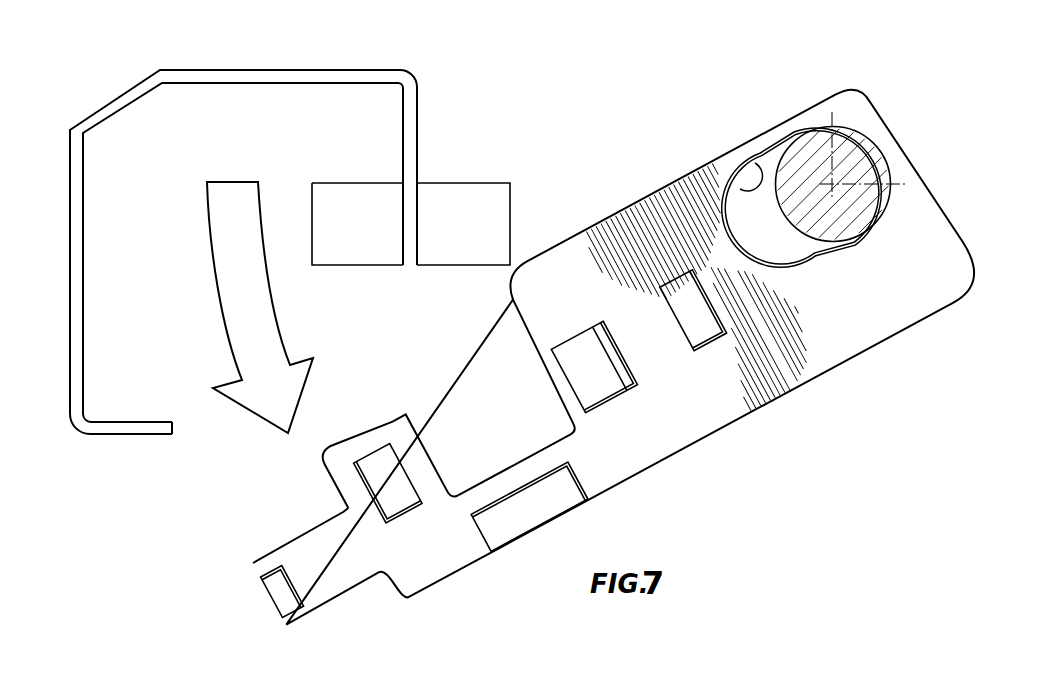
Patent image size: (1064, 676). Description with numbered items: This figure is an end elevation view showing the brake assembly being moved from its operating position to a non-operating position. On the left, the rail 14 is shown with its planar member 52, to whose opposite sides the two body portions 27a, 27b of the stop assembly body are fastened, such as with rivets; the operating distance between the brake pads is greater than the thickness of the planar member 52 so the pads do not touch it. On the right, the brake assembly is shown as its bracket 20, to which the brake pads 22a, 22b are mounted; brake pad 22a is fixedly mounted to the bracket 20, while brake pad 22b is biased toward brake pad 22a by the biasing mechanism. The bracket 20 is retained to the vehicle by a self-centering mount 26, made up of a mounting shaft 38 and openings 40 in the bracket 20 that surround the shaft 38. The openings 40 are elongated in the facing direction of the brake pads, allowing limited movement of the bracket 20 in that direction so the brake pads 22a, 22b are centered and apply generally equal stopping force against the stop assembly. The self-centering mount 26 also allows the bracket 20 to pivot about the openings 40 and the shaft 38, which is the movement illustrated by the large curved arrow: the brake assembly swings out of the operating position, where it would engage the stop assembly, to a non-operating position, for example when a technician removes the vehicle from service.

The rail 14 is at (323, 70).
The planar member 52 is at (412, 133).
The body portion 27a is at (485, 183).
The body portion 27b is at (377, 183).
The bracket 20 is at (742, 417).
The brake pad 22a is at (410, 418).
The brake pad 22b is at (543, 402).
The self-centering mount 26 is at (858, 240).
The mounting shaft 38 is at (780, 160).
The opening 40 is at (752, 182).